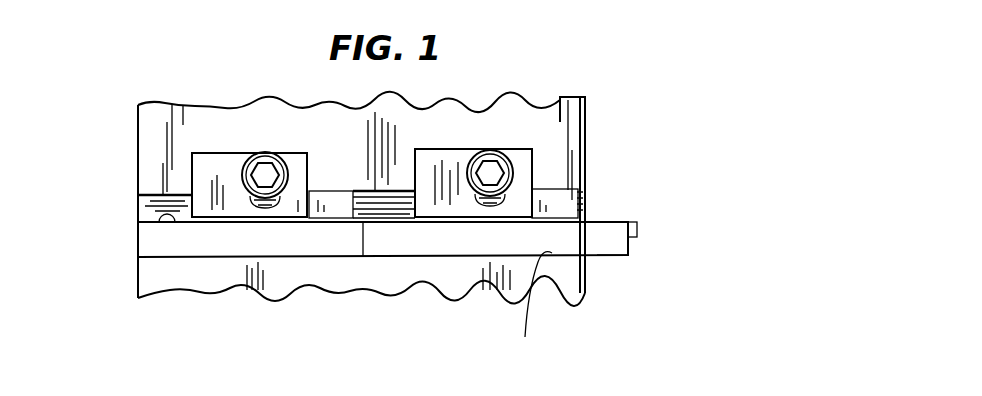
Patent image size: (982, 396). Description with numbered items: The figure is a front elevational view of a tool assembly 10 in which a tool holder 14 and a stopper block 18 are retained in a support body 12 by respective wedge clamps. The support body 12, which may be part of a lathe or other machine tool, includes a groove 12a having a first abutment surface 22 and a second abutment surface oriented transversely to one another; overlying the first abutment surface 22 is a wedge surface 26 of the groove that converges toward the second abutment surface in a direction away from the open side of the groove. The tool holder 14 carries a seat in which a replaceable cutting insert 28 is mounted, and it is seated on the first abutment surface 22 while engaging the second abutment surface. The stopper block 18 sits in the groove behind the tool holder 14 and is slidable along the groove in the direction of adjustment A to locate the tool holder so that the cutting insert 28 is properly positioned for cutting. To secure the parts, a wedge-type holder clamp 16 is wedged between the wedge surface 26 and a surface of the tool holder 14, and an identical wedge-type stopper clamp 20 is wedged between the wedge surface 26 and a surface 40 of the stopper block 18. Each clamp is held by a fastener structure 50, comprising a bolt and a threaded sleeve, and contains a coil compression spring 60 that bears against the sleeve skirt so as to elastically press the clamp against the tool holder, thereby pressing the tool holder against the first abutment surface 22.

The tool assembly 10 is at (557, 74).
The support body 12 is at (550, 125).
The groove 12a is at (382, 200).
The tool holder 14 is at (603, 264).
The holder clamp 16 is at (470, 138).
The stopper block 18 is at (322, 268).
The stopper clamp 20 is at (189, 179).
The first abutment surface 22 is at (529, 307).
The wedge surface 26 is at (354, 185).
The cutting insert 28 is at (632, 222).
The surface of the stopper block 40 is at (174, 218).
The fastener structure 50 is at (234, 165).
The coil compression spring 60 is at (260, 207).
The direction of adjustment A is at (664, 235).